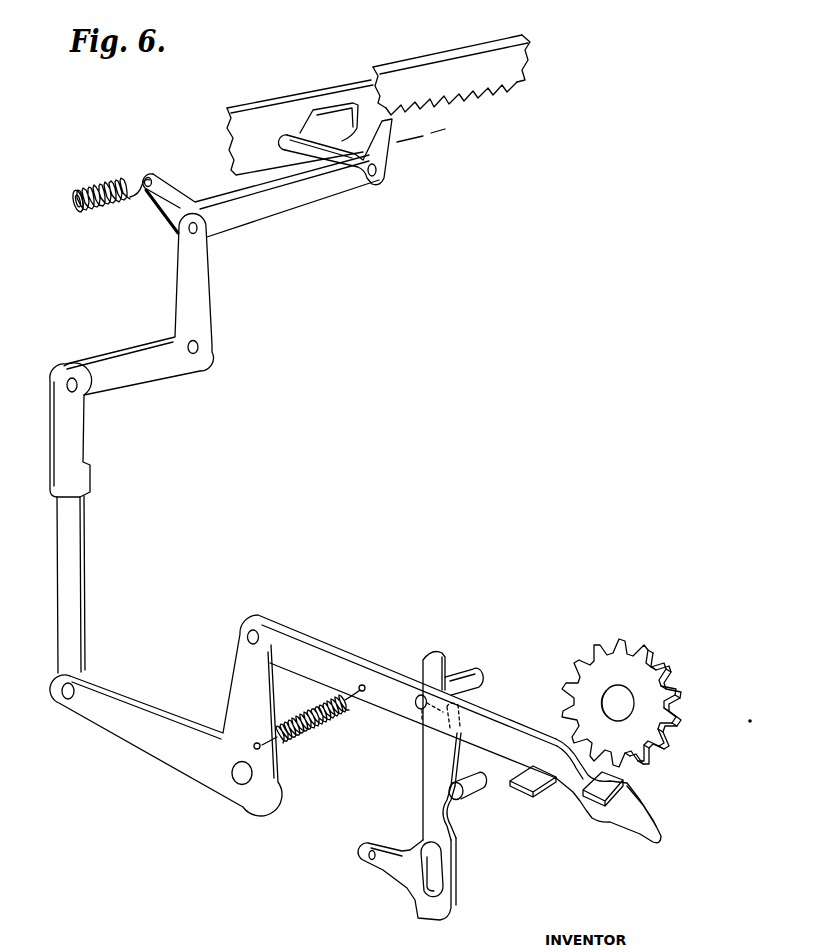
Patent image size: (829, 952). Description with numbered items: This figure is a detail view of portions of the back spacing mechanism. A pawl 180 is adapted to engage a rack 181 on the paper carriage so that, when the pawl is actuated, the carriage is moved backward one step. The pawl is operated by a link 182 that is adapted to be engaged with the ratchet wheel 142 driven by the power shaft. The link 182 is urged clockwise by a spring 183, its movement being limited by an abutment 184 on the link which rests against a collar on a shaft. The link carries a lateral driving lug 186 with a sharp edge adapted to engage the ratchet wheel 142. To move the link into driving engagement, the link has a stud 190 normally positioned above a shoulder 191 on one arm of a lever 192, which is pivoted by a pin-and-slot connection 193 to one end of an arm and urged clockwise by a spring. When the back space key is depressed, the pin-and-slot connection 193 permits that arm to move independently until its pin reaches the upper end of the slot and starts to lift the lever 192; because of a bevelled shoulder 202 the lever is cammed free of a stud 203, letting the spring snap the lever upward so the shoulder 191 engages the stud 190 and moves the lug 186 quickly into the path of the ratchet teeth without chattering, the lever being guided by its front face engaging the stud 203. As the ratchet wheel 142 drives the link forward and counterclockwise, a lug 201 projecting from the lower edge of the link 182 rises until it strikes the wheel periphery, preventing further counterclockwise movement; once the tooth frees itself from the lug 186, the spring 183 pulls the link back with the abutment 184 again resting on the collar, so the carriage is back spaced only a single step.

The ratchet wheel 142 is at (623, 658).
The pawl 180 is at (343, 180).
The rack 181 is at (500, 67).
The link 182 is at (340, 662).
The spring 183 is at (330, 727).
The abutment 184 is at (648, 843).
The lateral driving lug 186 is at (623, 778).
The stud 190 is at (470, 676).
The shoulder 191 is at (462, 727).
The lever 192 is at (427, 768).
The pin-and-slot connection 193 is at (437, 878).
The lug 201 is at (540, 782).
The bevelled shoulder 202 is at (453, 820).
The stud 203 is at (465, 787).